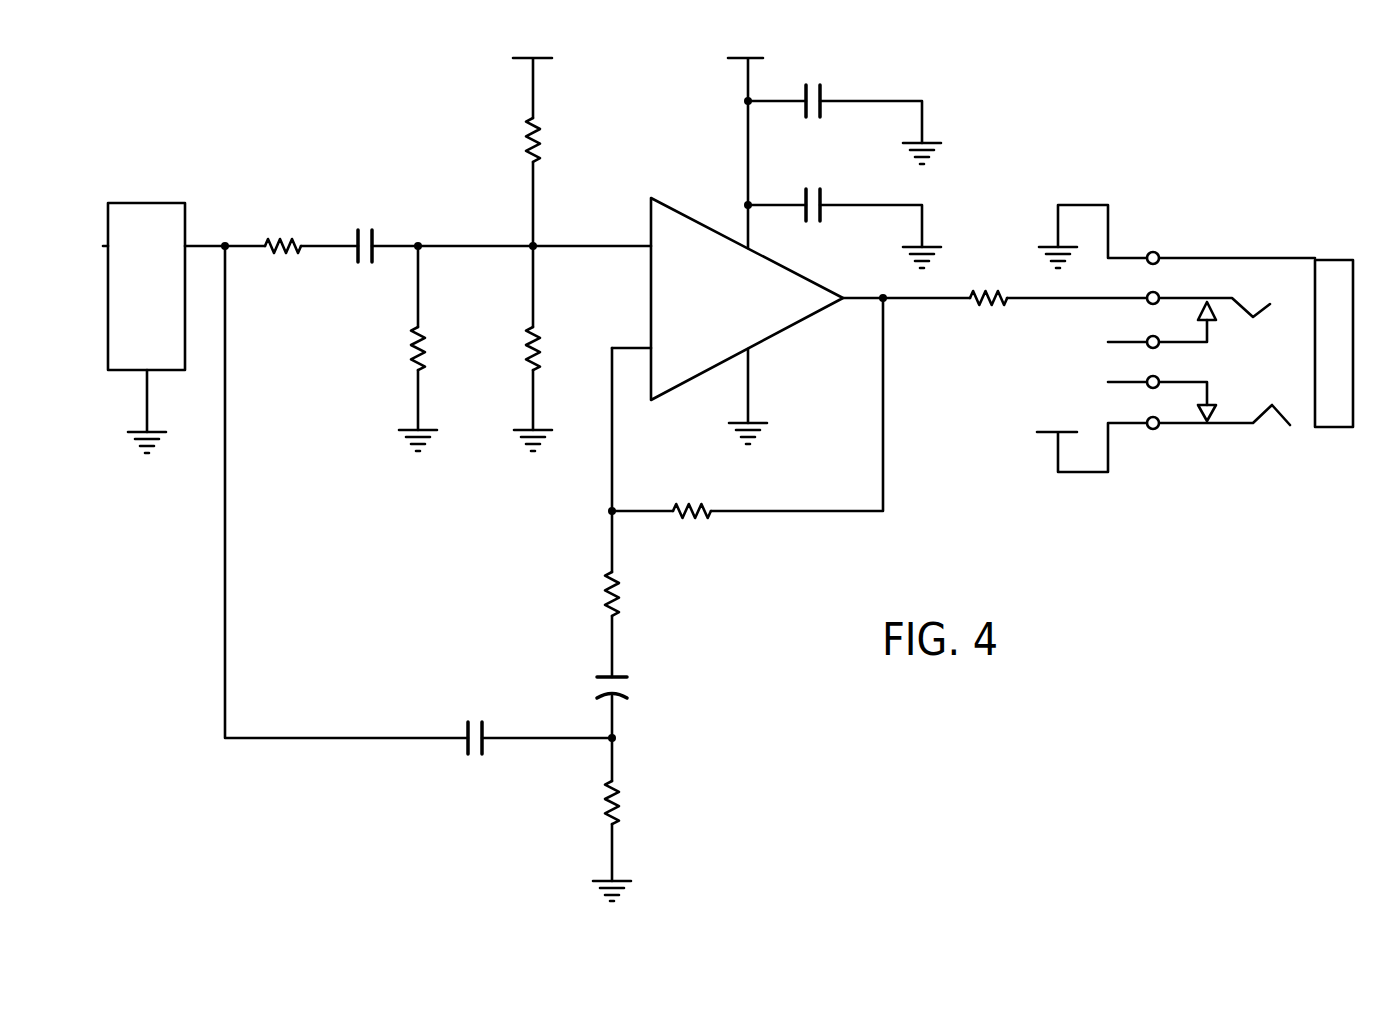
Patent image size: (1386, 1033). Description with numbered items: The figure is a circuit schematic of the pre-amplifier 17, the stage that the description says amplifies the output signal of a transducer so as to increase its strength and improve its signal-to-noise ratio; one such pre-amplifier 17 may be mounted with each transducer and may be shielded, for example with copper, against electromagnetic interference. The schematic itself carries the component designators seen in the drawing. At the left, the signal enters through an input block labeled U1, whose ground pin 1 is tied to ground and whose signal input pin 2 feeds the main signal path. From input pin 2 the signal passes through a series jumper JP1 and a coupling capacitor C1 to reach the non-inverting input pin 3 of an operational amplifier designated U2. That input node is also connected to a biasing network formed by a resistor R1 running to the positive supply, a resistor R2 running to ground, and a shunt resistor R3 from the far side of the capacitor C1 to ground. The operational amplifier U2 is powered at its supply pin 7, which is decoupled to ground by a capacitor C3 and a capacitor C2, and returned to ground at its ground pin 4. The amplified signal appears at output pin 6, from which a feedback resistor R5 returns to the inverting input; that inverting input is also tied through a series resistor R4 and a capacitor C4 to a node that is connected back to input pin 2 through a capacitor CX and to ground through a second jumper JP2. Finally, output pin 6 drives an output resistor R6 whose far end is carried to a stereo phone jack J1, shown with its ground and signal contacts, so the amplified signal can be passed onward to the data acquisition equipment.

The pre-amplifier 17 is at (305, 112).
The input connector U1 is at (124, 270).
The operational amplifier OP162 U2 is at (751, 299).
The U1 ground pin 1 is at (147, 411).
The input pin 2 is at (418, 281).
The non-inverting input pin 3 is at (511, 232).
The op-amp ground pin 4 is at (747, 396).
The op-amp output pin 6 is at (906, 283).
The op-amp supply pin 7 is at (747, 136).
The jumper JP1 is at (309, 223).
The jumper JP2 is at (633, 841).
The capacitor C1 0.22 uF C1 is at (364, 247).
The capacitor C2 10 uF C2 is at (844, 218).
The capacitor C3 0.1 uF C3 is at (844, 114).
The capacitor C4 0.1 uF C4 is at (626, 728).
The capacitor CX is at (418, 520).
The resistor R1 2M R1 is at (544, 135).
The resistor R2 2M R2 is at (548, 348).
The resistor R3 1M R3 is at (432, 348).
The resistor R4 10K R4 is at (639, 624).
The resistor R5 100k R5 is at (745, 435).
The resistor R6 is at (1043, 302).
The stereo phone jack J1 is at (1206, 330).